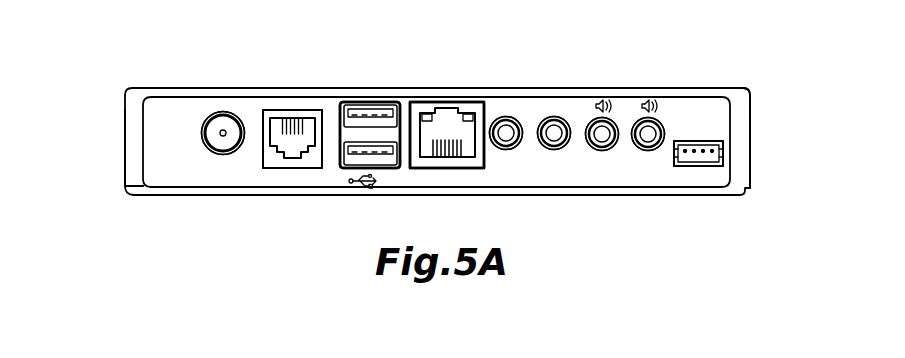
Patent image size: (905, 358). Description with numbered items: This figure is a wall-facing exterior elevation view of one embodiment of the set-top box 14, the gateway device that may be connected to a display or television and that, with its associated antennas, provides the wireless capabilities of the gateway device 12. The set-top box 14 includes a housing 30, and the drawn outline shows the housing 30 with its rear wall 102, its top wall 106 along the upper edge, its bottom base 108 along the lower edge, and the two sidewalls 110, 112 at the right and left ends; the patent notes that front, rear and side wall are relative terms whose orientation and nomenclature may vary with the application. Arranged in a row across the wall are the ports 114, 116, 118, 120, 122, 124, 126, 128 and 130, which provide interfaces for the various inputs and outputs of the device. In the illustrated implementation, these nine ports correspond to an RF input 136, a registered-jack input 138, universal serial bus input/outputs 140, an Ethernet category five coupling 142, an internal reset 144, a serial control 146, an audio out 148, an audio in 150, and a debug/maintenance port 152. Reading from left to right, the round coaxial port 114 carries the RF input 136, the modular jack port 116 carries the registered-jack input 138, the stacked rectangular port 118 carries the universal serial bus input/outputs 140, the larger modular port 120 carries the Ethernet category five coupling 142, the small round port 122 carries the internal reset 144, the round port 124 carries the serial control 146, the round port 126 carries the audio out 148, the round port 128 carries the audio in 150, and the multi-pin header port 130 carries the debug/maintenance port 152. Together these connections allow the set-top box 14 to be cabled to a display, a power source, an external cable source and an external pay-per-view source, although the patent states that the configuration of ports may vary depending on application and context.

The gateway device 12 is at (128, 73).
The set-top box 14 is at (152, 180).
The housing 30 is at (732, 82).
The rear wall 102 is at (191, 190).
The top wall 106 is at (193, 88).
The bottom base 108 is at (312, 192).
The sidewall 110 is at (750, 130).
The sidewall 112 is at (124, 133).
The port 114 is at (226, 112).
The port 116 is at (296, 110).
The port 118 is at (375, 103).
The port 120 is at (450, 103).
The port 122 is at (509, 117).
The port 124 is at (557, 117).
The port 126 is at (606, 118).
The port 128 is at (655, 118).
The port 130 is at (724, 158).
The RF input 136 is at (221, 155).
The RJ-45 input 138 is at (271, 168).
The universal serial bus (USB) input/outputs 140 is at (358, 168).
The Ethernet category 5 (Cat 5) coupling 142 is at (446, 168).
The internal reset 144 is at (512, 150).
The RS232 control 146 is at (558, 150).
The audio out 148 is at (607, 151).
The audio in 150 is at (653, 151).
The debug/maintenance port 152 is at (702, 167).